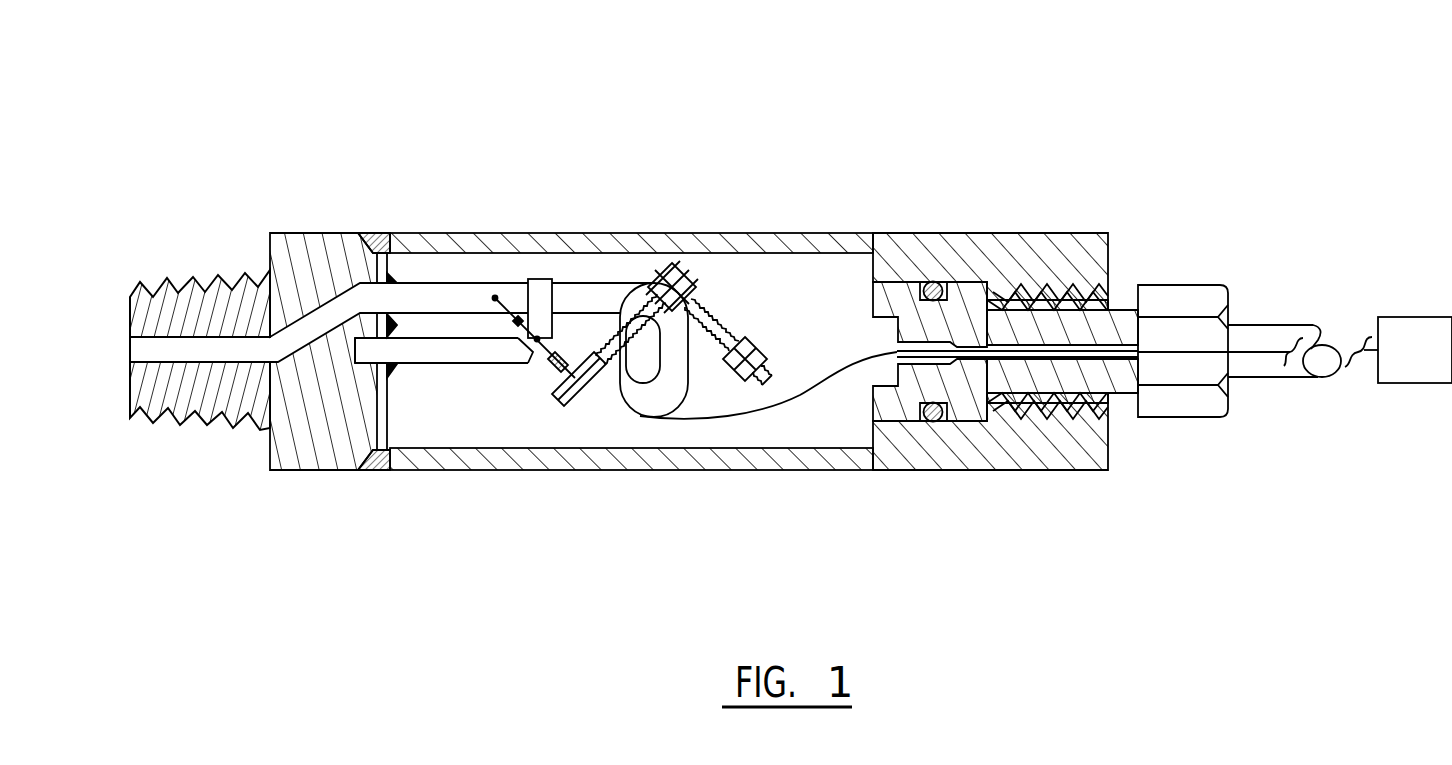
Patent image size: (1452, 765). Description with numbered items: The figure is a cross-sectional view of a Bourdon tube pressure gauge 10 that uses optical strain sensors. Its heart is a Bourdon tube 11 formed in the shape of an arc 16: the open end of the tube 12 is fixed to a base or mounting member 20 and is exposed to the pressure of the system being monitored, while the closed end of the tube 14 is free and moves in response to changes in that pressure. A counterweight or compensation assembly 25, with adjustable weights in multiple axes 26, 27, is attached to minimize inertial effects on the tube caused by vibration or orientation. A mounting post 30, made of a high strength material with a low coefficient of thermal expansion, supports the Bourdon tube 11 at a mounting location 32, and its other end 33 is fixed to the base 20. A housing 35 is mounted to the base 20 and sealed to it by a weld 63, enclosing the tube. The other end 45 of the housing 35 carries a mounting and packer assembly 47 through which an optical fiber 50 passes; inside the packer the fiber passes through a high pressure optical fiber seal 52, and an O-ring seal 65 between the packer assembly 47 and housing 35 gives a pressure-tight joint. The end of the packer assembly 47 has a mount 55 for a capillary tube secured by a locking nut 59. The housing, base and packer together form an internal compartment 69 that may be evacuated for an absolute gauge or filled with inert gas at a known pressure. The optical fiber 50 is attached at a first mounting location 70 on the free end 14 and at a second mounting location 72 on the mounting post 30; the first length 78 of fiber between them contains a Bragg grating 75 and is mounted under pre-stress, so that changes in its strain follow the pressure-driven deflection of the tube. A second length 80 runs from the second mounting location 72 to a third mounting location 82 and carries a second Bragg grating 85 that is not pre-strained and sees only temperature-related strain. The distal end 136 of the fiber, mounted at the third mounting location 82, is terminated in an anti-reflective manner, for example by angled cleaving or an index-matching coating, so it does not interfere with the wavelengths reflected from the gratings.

The Bourdon tube pressure gauge 10 is at (748, 107).
The Bourdon tube 11 is at (627, 292).
The open end of the tube 12 is at (330, 297).
The closed end of the tube 14 is at (598, 407).
The arc 16 is at (683, 382).
The base or mounting member 20 is at (300, 268).
The counterweight or compensation assembly 25 is at (707, 300).
The adjustable weight 26 is at (675, 262).
The adjustable weight 27 is at (740, 343).
The mounting post 30 is at (433, 353).
The mounting location 32 is at (582, 277).
The other end of the mounting post 33 is at (410, 357).
The housing 35 is at (722, 243).
The other end of the housing 45 is at (1033, 233).
The mounting and packer assembly 47 is at (1045, 380).
The optical fiber 50 is at (1253, 350).
The high pressure optical fiber seal 52 is at (970, 335).
The mount 55 is at (1128, 290).
The locking nut 59 is at (1180, 402).
The weld 63 is at (373, 240).
The O-ring seal 65 is at (935, 283).
The internal compartment 69 is at (815, 430).
The first mounting location 70 is at (537, 367).
The second mounting location 72 is at (520, 340).
The Bragg grating 75 is at (563, 380).
The first length of fiber 78 is at (560, 387).
The second length of fiber 80 is at (516, 321).
The third mounting location 82 is at (537, 337).
The second Bragg grating 85 is at (543, 297).
The distal end of the fiber 136 is at (495, 298).